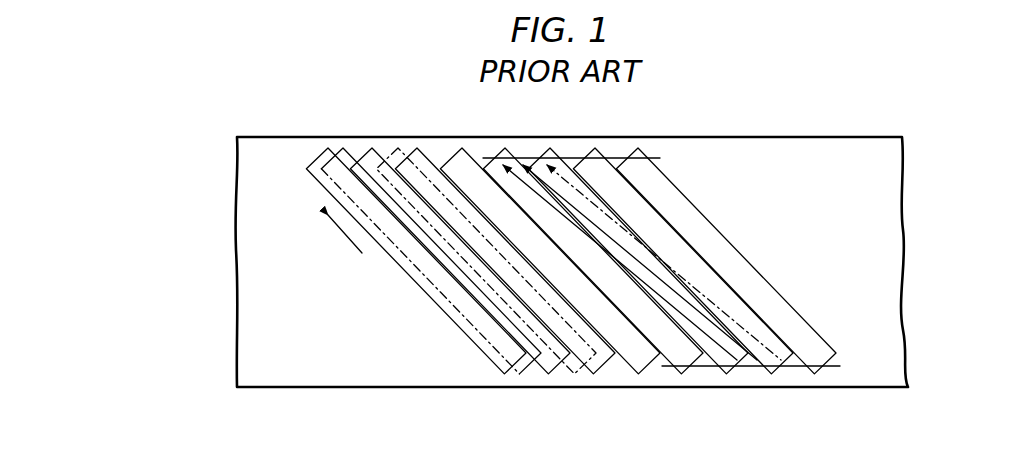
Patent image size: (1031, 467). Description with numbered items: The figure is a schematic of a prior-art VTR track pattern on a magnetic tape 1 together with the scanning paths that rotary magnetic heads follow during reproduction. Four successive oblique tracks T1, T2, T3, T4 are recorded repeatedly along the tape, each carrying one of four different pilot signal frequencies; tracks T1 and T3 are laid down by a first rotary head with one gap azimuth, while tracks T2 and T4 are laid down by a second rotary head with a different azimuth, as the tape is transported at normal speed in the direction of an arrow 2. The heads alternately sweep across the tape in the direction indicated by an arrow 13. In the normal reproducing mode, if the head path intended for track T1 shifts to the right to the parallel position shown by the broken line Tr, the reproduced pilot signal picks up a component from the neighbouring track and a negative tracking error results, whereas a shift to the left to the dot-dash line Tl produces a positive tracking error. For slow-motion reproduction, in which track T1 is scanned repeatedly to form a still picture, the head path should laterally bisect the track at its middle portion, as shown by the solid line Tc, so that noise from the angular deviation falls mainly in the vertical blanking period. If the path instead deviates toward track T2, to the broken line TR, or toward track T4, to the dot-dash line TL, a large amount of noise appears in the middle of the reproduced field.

The magnetic tape 1 is at (393, 388).
The arrow indicating tape transport direction 2 is at (310, 398).
The arrow indicating head scanning direction 13 is at (350, 240).
The oblique track T1 is at (548, 374).
The oblique track T2 is at (417, 148).
The oblique track T3 is at (640, 374).
The oblique track T4 is at (328, 148).
The head scanning path deviated to the left Tl is at (397, 258).
The head scanning path deviated to the right Tr is at (442, 310).
The slow-motion scanning path deviated toward track T4 TL is at (557, 215).
The centered slow-motion scanning path Tc is at (612, 235).
The slow-motion scanning path deviated toward track T2 TR is at (747, 337).